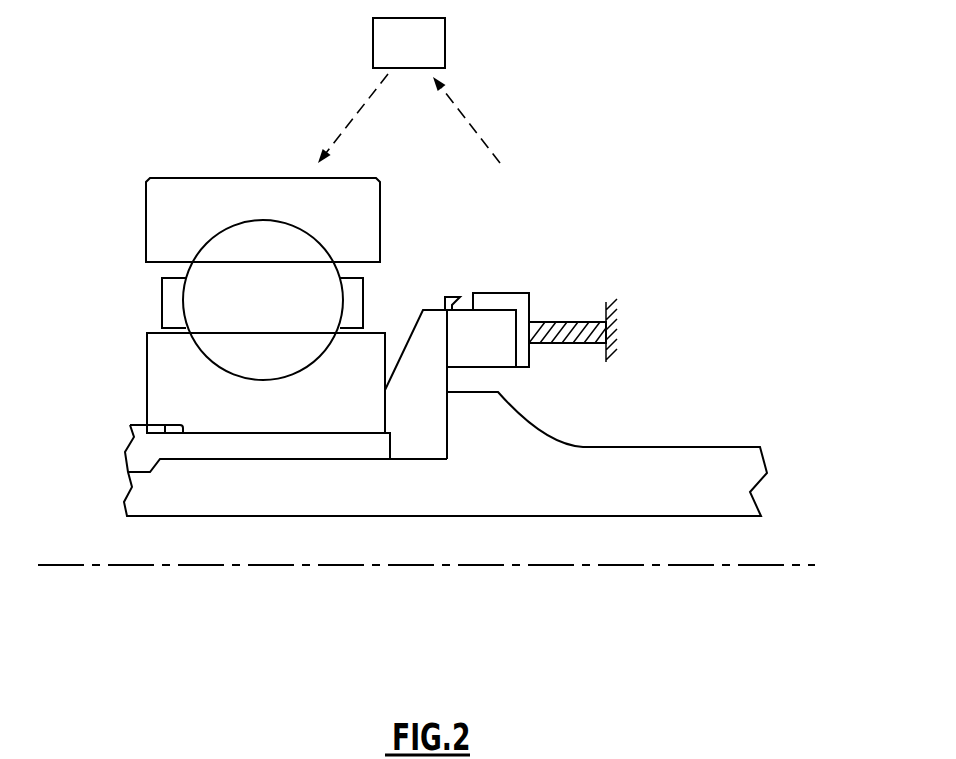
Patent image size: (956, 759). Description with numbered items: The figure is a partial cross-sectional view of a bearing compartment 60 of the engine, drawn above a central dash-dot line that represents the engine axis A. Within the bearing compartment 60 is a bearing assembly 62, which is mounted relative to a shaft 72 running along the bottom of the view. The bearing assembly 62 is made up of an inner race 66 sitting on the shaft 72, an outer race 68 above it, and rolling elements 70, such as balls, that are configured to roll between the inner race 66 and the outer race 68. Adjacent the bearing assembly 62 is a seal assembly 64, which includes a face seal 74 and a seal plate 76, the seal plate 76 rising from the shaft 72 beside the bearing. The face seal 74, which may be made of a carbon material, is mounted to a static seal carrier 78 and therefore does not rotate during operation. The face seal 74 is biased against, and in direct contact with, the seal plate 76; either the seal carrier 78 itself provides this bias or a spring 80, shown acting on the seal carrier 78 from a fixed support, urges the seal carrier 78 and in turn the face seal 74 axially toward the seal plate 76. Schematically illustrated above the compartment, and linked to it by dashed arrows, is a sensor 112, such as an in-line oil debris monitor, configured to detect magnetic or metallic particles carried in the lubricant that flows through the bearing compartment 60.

The sensor 112 is at (431, 54).
The bearing compartment 60 is at (120, 250).
The bearing assembly 62 is at (155, 275).
The seal assembly 64 is at (477, 255).
The inner race 66 is at (276, 421).
The outer race 68 is at (279, 214).
The rolling elements 70 is at (279, 304).
The shaft 72 is at (572, 502).
The face seal 74 is at (502, 354).
The seal plate 76 is at (434, 399).
The seal carrier 78 is at (503, 303).
The spring 80 is at (568, 322).
The axis A is at (798, 565).